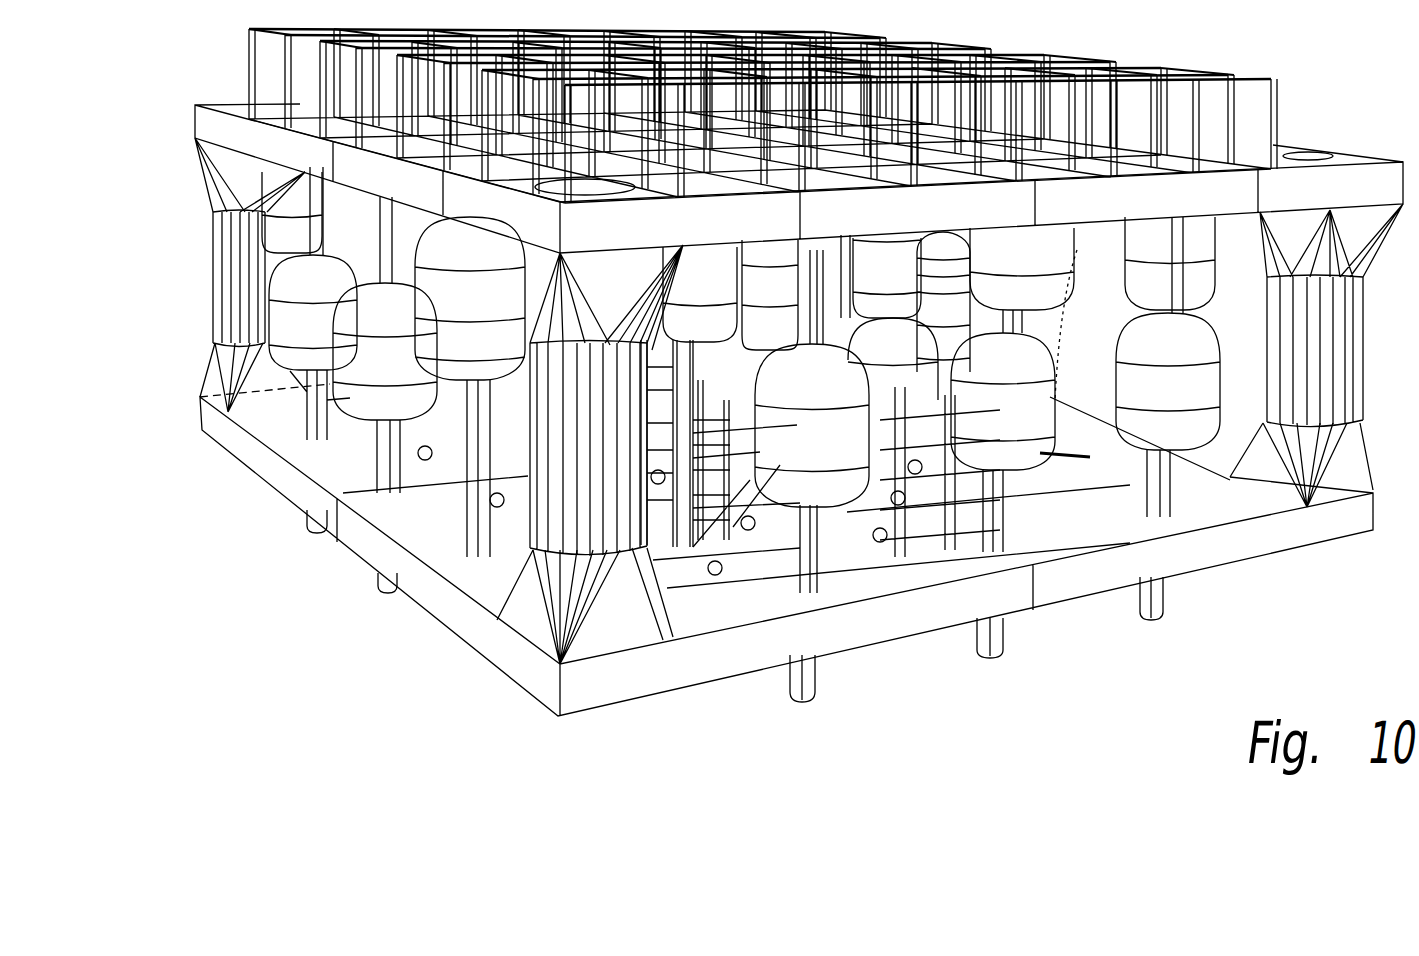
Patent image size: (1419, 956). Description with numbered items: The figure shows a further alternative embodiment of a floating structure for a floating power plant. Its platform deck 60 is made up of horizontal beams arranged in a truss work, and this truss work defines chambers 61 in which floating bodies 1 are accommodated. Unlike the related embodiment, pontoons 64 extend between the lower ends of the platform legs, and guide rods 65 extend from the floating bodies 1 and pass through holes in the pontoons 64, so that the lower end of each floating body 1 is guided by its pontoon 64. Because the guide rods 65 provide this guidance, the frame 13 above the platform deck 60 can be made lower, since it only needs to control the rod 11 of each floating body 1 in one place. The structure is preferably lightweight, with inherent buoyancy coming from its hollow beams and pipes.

The floating body 1 is at (1193, 330).
The rod 11 is at (1187, 262).
The frame 13 is at (1240, 63).
The platform deck 60 is at (212, 127).
The chamber 61 is at (1363, 350).
The pontoon 64 is at (1230, 547).
The guide rod 65 is at (1167, 603).